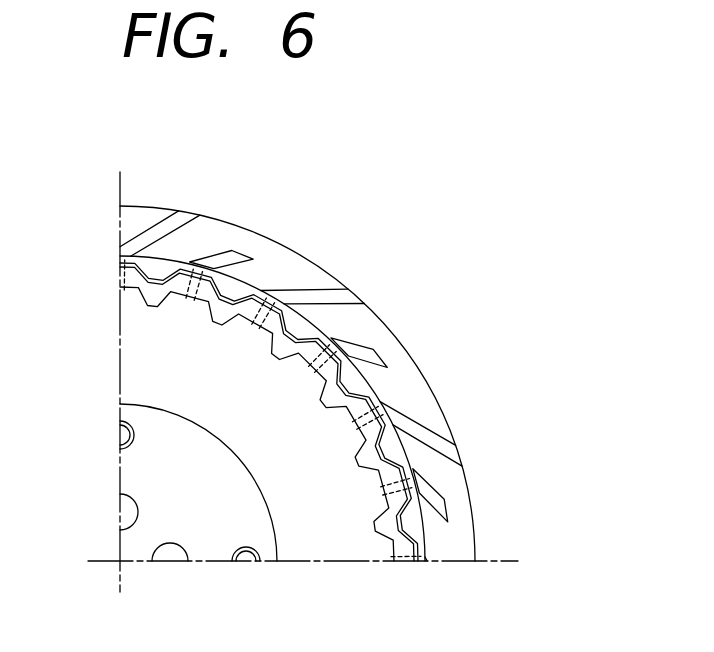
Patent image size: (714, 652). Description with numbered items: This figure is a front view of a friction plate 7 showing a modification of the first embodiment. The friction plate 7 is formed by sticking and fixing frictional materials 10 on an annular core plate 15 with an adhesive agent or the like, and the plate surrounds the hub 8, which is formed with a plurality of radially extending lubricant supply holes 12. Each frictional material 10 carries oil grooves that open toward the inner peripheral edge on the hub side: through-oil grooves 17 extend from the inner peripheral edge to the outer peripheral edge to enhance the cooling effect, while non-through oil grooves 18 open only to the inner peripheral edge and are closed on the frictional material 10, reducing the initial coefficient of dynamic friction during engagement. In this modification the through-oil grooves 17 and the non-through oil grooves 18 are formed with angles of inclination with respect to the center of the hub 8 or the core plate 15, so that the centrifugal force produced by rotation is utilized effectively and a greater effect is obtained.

The friction plate 7 is at (323, 259).
The hub 8 is at (347, 540).
The frictional material 10 is at (462, 484).
The lubricant supply hole 12 is at (353, 420).
The core plate 15 is at (160, 263).
The through-oil groove 17 is at (350, 293).
The non-through oil groove 18 is at (380, 352).